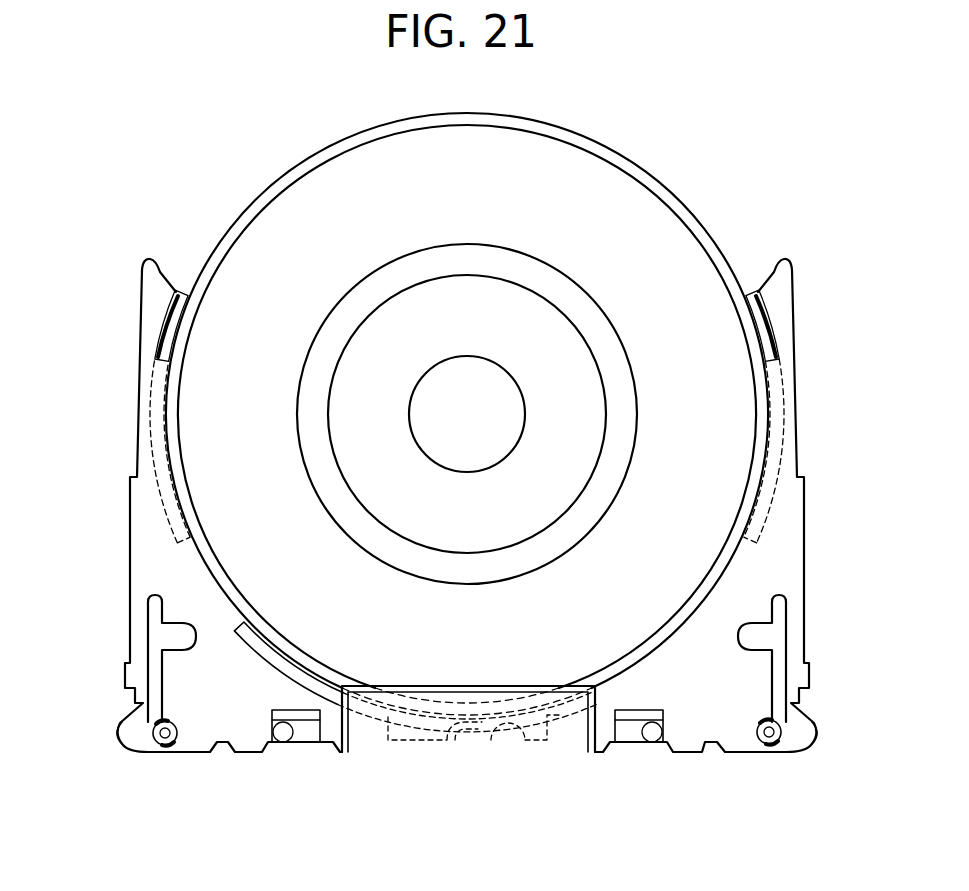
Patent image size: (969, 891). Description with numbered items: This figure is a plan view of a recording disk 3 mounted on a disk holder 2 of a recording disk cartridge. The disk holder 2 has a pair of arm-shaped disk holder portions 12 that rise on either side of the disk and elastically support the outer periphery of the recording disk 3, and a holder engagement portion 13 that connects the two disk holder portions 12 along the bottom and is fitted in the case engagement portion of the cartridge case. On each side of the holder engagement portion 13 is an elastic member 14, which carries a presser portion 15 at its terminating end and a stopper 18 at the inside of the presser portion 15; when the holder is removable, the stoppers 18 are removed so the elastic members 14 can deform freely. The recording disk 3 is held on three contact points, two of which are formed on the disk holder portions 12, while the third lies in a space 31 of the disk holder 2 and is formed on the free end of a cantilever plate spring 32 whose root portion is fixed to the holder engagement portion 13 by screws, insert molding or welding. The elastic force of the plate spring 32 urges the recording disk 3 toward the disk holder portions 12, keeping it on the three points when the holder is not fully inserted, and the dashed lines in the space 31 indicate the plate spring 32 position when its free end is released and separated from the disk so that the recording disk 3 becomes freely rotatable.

The disk holder 2 is at (785, 517).
The recording disk 3 is at (538, 155).
The disk holder portions 12 is at (150, 297).
The holder engagement portion 13 is at (687, 737).
The elastic member 14 is at (128, 677).
The presser portions 15 is at (120, 737).
The stoppers 18 is at (163, 752).
The space 31 is at (525, 745).
The plate spring 32 is at (290, 677).